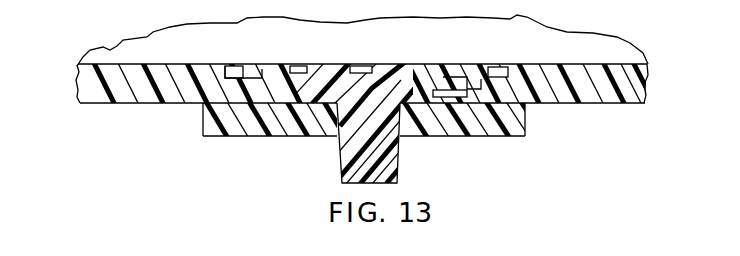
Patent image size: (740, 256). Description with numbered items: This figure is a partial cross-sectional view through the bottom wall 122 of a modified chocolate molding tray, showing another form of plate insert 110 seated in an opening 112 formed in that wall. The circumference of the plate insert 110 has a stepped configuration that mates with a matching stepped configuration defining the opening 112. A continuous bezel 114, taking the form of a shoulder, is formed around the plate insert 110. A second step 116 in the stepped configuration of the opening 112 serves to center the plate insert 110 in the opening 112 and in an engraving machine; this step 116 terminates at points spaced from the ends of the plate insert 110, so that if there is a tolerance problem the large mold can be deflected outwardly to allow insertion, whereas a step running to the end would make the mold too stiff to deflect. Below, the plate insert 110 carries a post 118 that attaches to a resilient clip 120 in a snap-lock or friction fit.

The plate insert 110 is at (377, 111).
The opening 112 is at (240, 67).
The continuous bezel 114 is at (503, 65).
The second step 116 is at (468, 63).
The post 118 is at (388, 164).
The resilient clip 120 is at (463, 136).
The bottom wall 122 is at (167, 104).